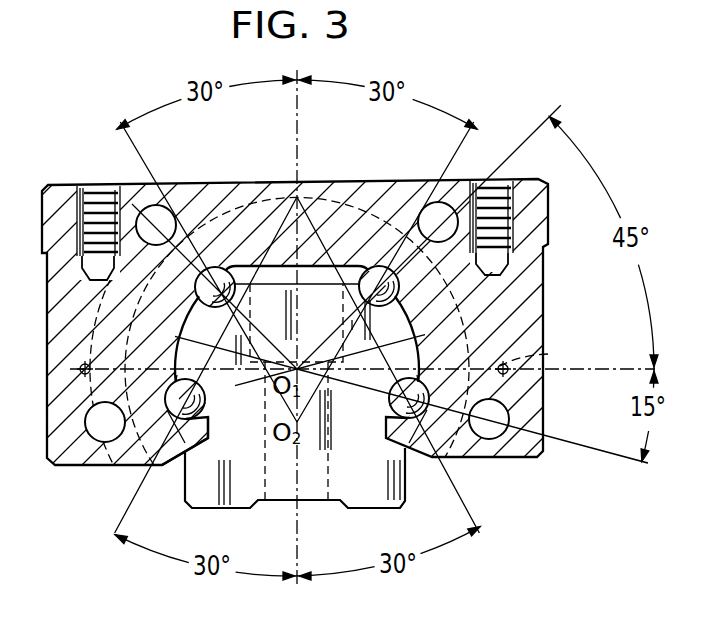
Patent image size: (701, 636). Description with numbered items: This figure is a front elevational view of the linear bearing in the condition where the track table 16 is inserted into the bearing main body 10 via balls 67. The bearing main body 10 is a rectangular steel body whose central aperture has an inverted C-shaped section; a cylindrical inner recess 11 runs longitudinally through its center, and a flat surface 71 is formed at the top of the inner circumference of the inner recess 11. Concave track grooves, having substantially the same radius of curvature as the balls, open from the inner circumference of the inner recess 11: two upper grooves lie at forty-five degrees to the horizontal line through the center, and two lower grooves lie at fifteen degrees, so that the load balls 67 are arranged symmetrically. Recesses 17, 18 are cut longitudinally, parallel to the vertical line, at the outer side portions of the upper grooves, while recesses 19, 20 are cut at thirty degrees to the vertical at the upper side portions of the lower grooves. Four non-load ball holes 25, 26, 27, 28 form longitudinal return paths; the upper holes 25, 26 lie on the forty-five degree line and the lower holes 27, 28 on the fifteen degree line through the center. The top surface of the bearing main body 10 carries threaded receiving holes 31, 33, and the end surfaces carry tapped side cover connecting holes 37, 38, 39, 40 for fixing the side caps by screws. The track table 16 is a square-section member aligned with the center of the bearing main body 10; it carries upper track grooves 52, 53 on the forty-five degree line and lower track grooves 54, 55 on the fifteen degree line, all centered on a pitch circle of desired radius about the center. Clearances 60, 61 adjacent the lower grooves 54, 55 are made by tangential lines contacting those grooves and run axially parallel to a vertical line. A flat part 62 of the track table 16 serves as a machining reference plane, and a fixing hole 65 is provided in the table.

The bearing main body 10 is at (323, 182).
The cylindrical inner recess 11 is at (249, 358).
The track table 16 is at (363, 500).
The recess 17 is at (196, 292).
The recess 18 is at (398, 279).
The recess 19 is at (172, 366).
The recess 20 is at (420, 364).
The non-load ball hole 25 is at (164, 213).
The non-load ball hole 26 is at (427, 206).
The non-load ball hole 27 is at (93, 441).
The non-load ball hole 28 is at (496, 441).
The threaded receiving hole 31 is at (93, 186).
The threaded receiving hole 33 is at (483, 181).
The side cover connecting hole 37 is at (96, 281).
The side cover connecting hole 38 is at (88, 404).
The side cover connecting hole 39 is at (496, 276).
The side cover connecting hole 40 is at (548, 354).
The track groove 52 is at (190, 380).
The track groove 53 is at (352, 320).
The track groove 54 is at (206, 394).
The track groove 55 is at (388, 398).
The clearance 60 is at (209, 430).
The clearance 61 is at (362, 442).
The flat part 62 is at (272, 290).
The fixing hole 65 is at (322, 502).
The balls 67 is at (222, 268).
The flat surface 71 is at (318, 265).